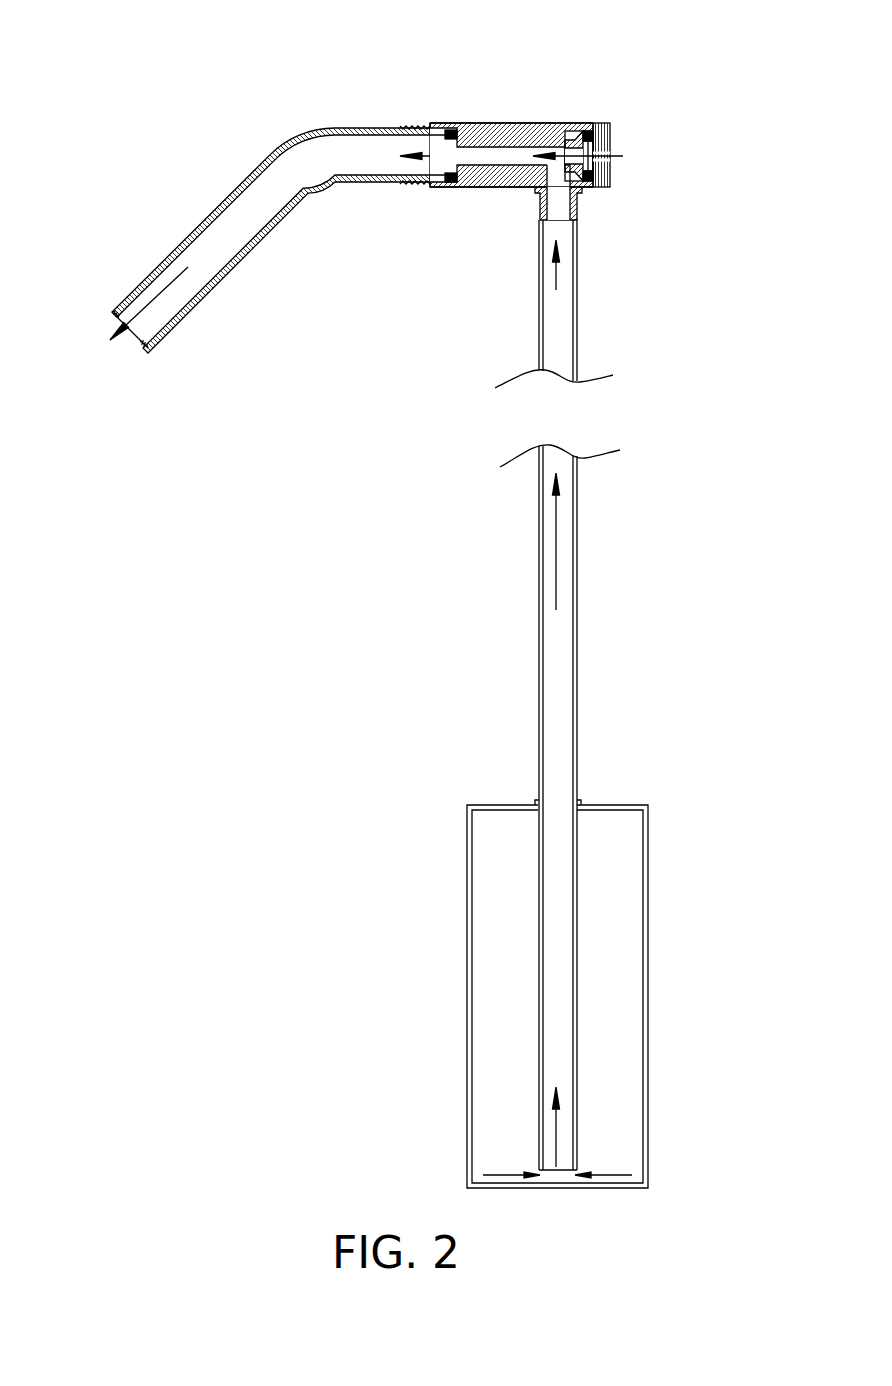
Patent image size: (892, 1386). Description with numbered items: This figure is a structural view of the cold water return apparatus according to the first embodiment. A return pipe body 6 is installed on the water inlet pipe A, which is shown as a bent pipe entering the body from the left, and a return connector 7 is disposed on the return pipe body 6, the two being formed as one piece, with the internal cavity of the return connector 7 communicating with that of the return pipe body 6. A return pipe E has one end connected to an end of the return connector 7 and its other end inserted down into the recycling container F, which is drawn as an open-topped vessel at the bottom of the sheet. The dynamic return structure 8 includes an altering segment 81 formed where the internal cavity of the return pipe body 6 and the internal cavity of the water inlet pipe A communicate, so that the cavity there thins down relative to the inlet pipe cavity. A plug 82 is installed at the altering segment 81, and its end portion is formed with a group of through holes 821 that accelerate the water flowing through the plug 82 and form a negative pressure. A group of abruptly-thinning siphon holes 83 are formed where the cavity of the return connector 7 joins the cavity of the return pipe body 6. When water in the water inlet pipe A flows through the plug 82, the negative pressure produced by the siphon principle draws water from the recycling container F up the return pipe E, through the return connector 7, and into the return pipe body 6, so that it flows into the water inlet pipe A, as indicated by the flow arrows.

The return pipe body 6 is at (482, 130).
The return connector 7 is at (540, 192).
The dynamic return structure 8 is at (647, 140).
The altering segment 81 is at (573, 123).
The plug 82 is at (597, 127).
The through holes 821 is at (593, 140).
The siphon holes 83 is at (598, 206).
The water inlet pipe A is at (272, 187).
The return pipe E is at (581, 700).
The recycling container F is at (631, 885).